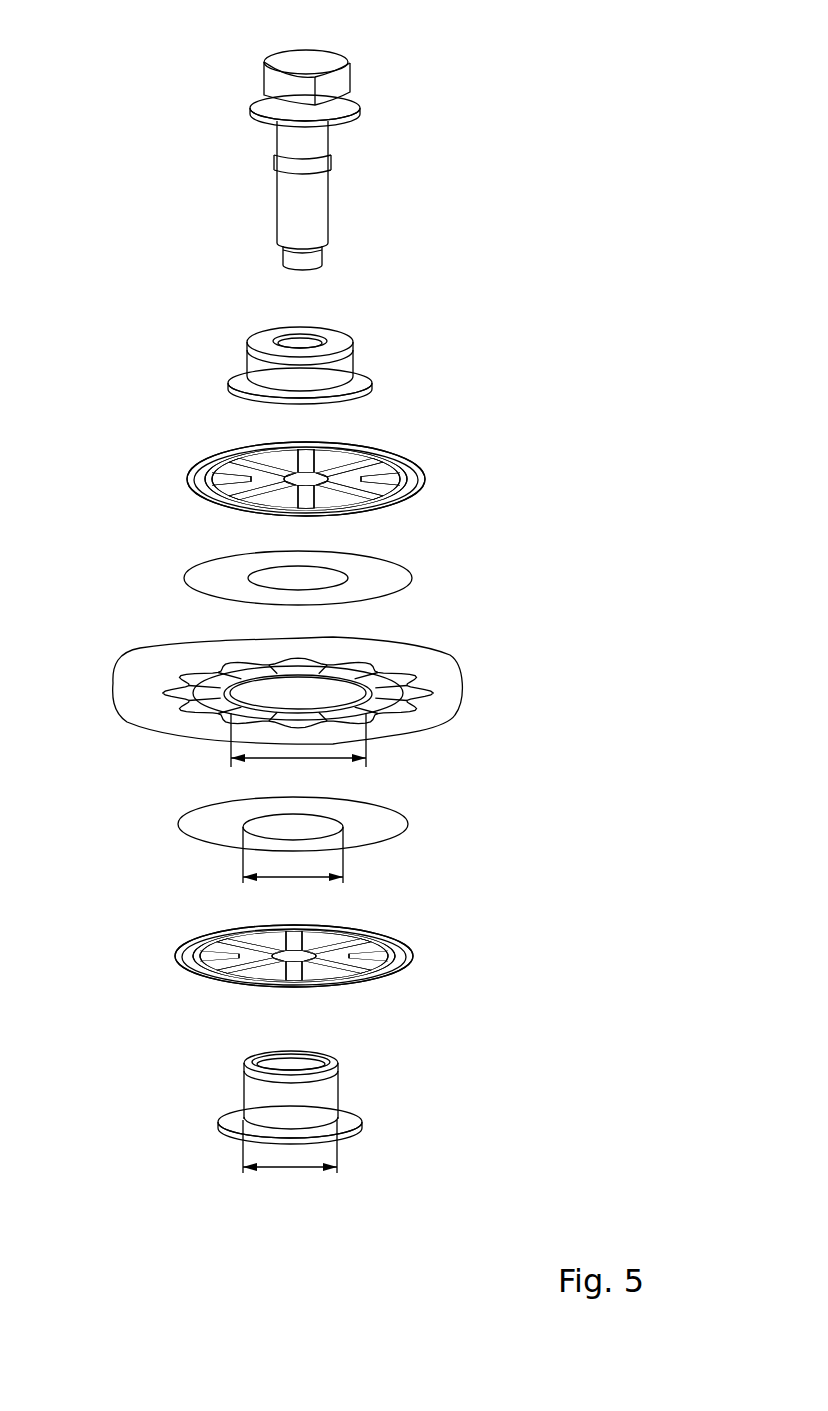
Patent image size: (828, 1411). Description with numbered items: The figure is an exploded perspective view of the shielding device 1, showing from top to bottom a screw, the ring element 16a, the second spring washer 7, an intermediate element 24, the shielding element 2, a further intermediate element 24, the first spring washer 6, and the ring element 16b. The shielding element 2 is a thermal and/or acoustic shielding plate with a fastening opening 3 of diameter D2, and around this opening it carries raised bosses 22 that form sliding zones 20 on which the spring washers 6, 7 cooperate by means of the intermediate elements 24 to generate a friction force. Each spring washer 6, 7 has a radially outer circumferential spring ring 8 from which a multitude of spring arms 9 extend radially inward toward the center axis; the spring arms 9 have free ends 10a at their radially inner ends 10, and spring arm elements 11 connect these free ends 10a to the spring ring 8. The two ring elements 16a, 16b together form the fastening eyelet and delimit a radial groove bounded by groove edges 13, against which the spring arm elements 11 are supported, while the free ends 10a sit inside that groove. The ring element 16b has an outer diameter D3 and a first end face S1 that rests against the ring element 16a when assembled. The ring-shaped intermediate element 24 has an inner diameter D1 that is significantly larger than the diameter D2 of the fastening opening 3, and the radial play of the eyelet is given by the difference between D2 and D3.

The shielding device 1 is at (580, 243).
The shielding element 2 is at (275, 662).
The fastening opening 3 is at (267, 695).
The first spring washer 6 is at (163, 946).
The second spring washer 7 is at (198, 455).
The spring ring 8 is at (413, 473).
The spring arms 9 is at (378, 473).
The radially inner ends 10 is at (279, 741).
The free ends 10a is at (317, 472).
The spring arm elements 11 is at (235, 473).
The groove edges 13 is at (227, 390).
The ring element 16a is at (368, 352).
The ring element 16b is at (221, 1066).
The sliding zones 20 is at (407, 688).
The bosses 22 is at (240, 660).
The intermediate element 24 is at (388, 582).
The inner diameter of intermediate element D1 is at (300, 877).
The diameter of fastening opening D2 is at (300, 758).
The outer diameter of ring element D3 is at (288, 1168).
The first end face S1 is at (252, 1055).